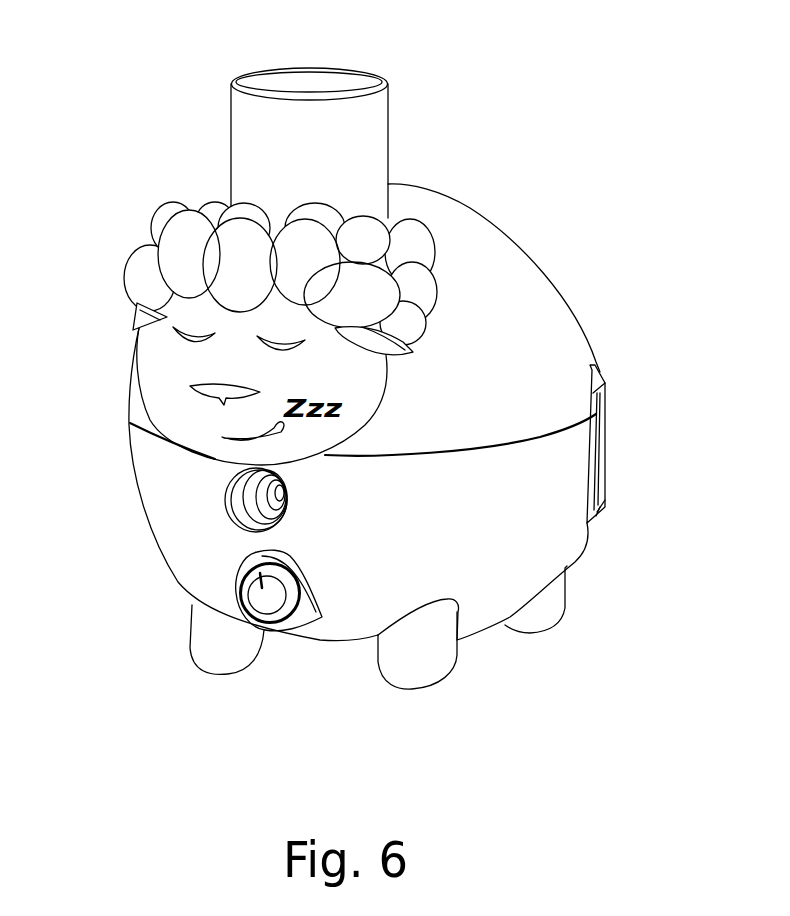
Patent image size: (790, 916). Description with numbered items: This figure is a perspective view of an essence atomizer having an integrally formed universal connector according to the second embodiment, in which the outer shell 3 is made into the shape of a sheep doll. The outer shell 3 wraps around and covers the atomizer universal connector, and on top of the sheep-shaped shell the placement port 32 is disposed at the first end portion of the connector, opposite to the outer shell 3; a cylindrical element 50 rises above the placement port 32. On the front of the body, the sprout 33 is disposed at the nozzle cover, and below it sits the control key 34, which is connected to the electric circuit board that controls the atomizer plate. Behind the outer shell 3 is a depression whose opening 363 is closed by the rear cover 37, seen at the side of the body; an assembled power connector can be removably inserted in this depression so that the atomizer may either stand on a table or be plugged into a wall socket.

The water tank 50 is at (247, 128).
The placement port 32 is at (390, 212).
The outer shell 3 is at (482, 601).
The sprout 33 is at (240, 503).
The control key 34 is at (268, 625).
The rear cover 37 is at (606, 483).
The opening 363 is at (601, 507).